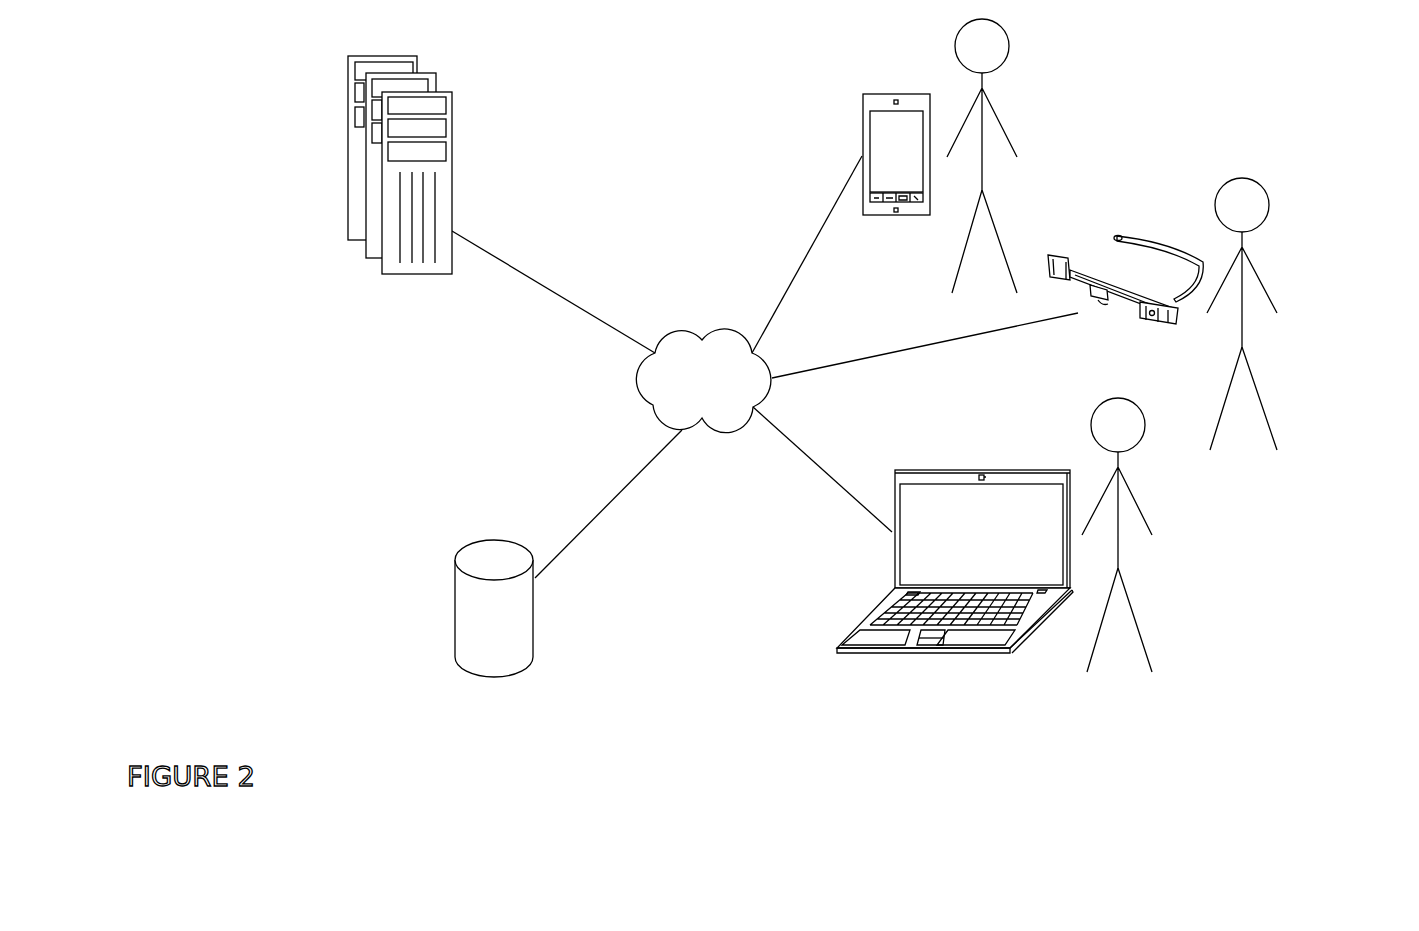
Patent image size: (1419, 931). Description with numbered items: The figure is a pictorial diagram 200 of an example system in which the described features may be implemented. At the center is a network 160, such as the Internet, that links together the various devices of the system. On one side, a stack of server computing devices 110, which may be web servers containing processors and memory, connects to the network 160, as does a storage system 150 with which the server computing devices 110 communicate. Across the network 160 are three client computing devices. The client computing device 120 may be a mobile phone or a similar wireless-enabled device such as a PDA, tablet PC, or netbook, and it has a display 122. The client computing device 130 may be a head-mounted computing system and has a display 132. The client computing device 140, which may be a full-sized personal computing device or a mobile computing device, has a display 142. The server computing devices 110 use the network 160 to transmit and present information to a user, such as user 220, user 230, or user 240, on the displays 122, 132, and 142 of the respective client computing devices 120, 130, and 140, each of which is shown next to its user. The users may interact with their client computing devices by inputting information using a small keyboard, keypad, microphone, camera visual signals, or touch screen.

The computing device 110 is at (452, 132).
The client computing device 120 is at (843, 154).
The display 122 is at (868, 152).
The client computing device 130 is at (1125, 275).
The display 132 is at (1163, 318).
The client computing device 140 is at (931, 561).
The display 142 is at (898, 572).
The storage system 150 is at (535, 627).
The network 160 is at (703, 381).
The system environment 200 is at (207, 732).
The user 220 is at (1013, 145).
The user 230 is at (1273, 303).
The user 240 is at (1147, 523).